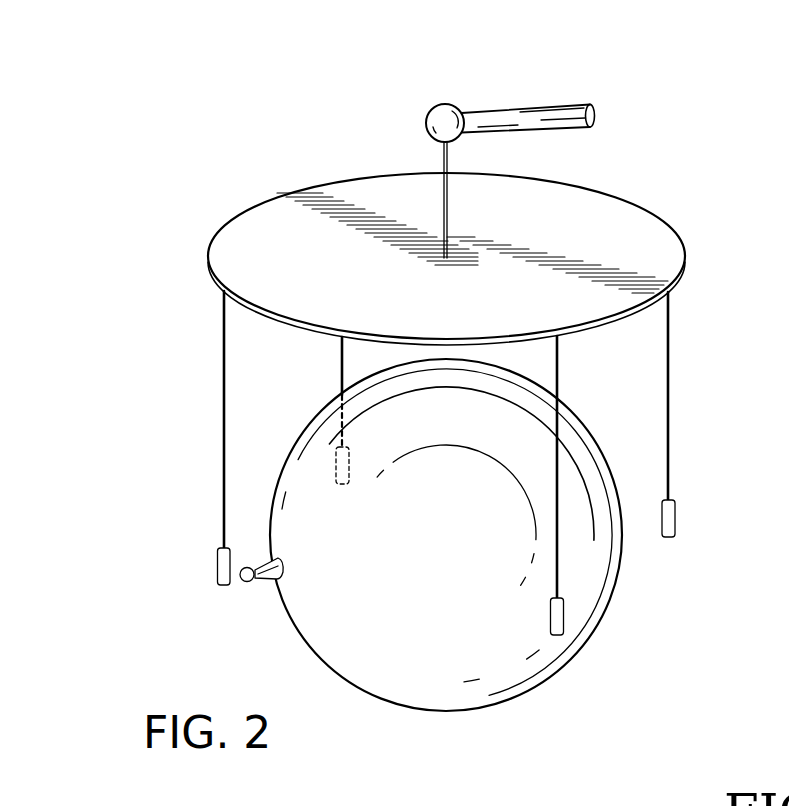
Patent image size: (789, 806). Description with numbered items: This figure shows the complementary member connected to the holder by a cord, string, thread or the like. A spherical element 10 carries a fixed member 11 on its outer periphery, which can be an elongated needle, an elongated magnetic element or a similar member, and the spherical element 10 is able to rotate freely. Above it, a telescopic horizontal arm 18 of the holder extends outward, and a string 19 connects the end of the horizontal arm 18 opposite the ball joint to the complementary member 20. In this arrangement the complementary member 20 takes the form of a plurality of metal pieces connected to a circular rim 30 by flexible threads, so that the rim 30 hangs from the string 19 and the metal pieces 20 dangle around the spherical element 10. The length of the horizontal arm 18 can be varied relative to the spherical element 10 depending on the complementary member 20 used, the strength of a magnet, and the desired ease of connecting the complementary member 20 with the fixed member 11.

The circular rim 30 is at (280, 163).
The string 19 is at (443, 162).
The telescopic horizontal arm 18 is at (596, 121).
The spherical element 10 is at (502, 673).
The fixed member 11 is at (266, 582).
The complementary member 20 is at (217, 568).